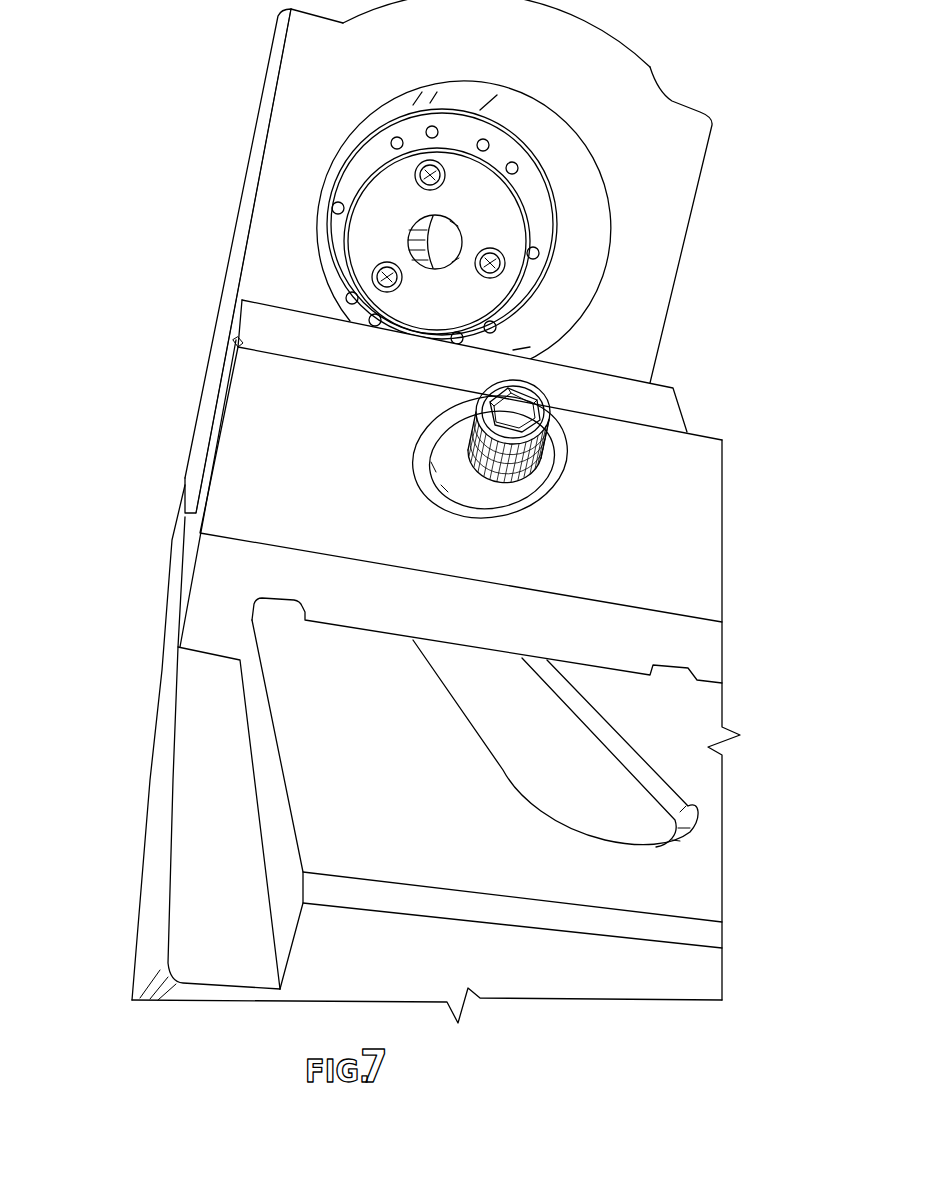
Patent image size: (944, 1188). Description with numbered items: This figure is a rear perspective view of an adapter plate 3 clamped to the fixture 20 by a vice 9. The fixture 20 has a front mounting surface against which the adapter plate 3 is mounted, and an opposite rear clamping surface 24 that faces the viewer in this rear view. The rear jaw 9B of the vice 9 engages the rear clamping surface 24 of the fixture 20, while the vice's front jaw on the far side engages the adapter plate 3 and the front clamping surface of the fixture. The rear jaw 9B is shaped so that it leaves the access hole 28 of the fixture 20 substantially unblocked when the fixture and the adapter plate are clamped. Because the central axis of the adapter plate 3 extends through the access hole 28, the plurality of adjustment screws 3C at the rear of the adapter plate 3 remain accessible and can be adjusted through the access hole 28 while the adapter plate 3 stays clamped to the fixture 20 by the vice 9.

The adapter plate 3 is at (540, 210).
The adjustment screws 3C is at (442, 178).
The vice 9 is at (153, 726).
The rear jaw 9B is at (283, 481).
The fixture 20 is at (273, 97).
The rear clamping surface 24 is at (297, 199).
The access hole 28 is at (558, 140).